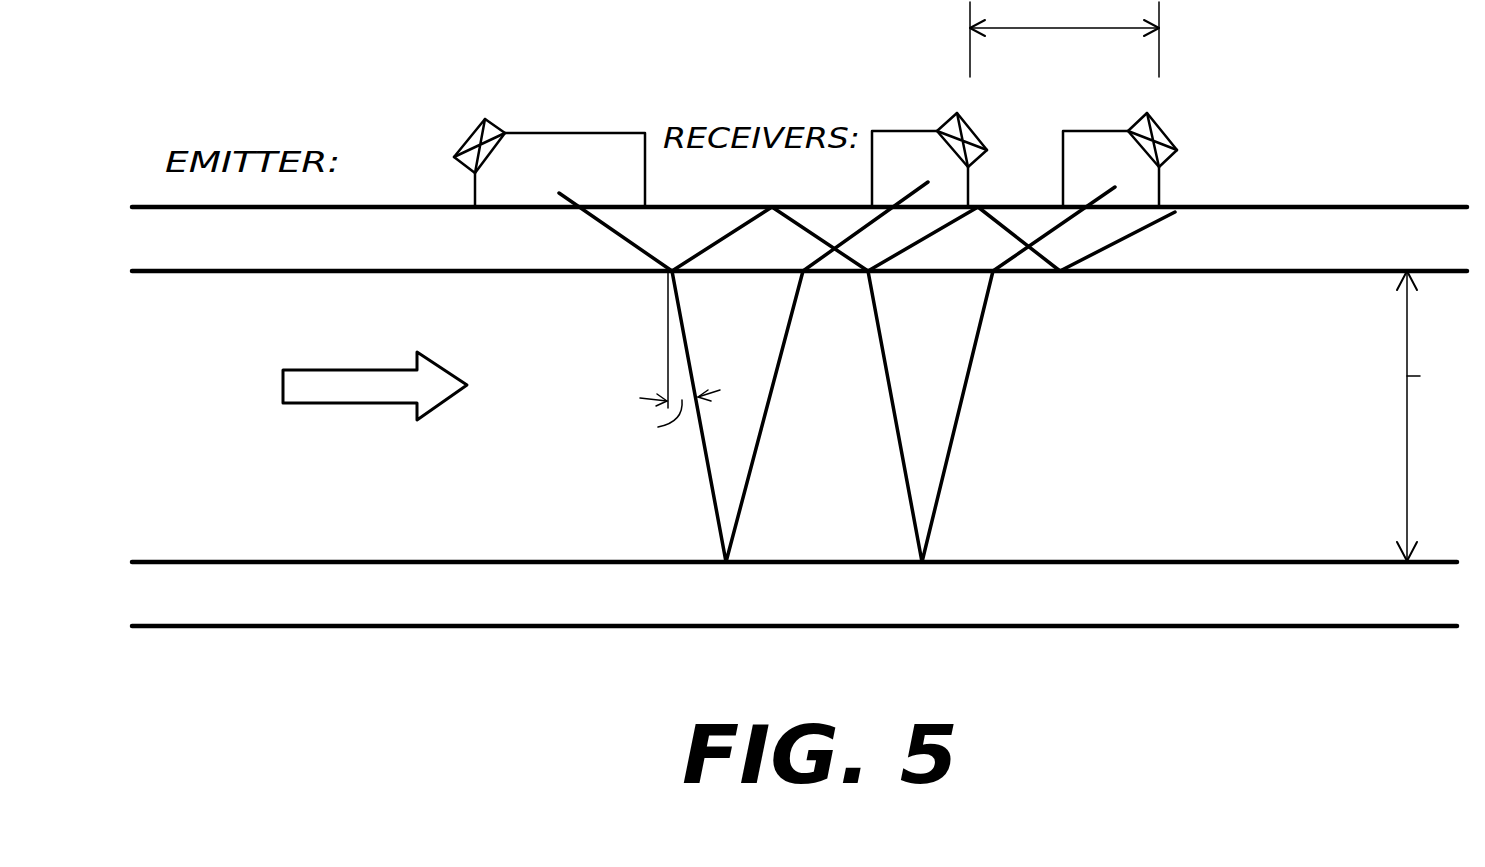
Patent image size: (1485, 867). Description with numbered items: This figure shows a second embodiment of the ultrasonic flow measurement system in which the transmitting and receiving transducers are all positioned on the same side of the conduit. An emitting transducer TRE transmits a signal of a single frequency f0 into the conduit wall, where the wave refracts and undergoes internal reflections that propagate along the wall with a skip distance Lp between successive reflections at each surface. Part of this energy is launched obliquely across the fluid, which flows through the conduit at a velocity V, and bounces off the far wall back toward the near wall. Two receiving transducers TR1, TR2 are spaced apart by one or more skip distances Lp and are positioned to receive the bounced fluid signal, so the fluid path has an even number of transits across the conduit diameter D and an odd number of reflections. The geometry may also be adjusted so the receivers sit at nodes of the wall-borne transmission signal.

The emitting transducer TRE is at (549, 149).
The single frequency f0 is at (463, 133).
The receiving transducer TR1 is at (928, 149).
The receiving transducer TR2 is at (1113, 149).
The skip distance Lp is at (1064, 38).
The fluid flow velocity V is at (375, 376).
The pipe inner diameter D is at (1421, 416).